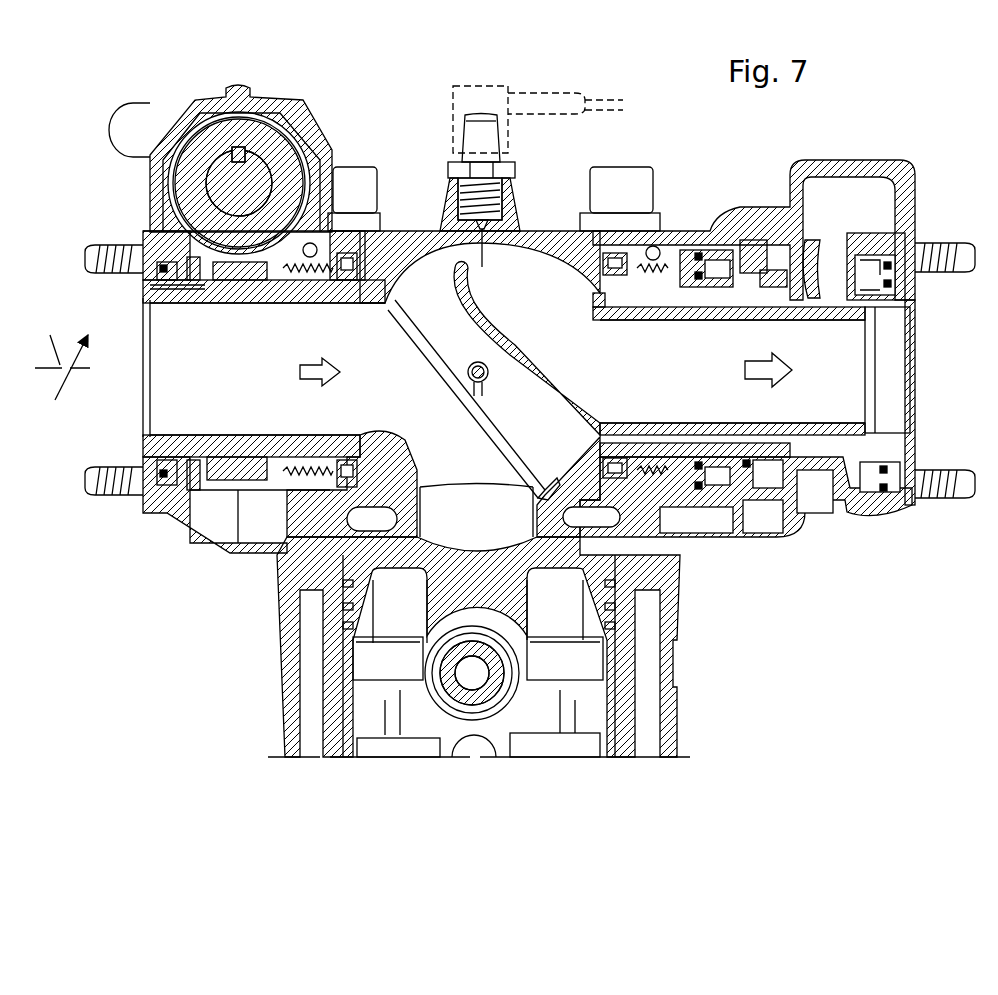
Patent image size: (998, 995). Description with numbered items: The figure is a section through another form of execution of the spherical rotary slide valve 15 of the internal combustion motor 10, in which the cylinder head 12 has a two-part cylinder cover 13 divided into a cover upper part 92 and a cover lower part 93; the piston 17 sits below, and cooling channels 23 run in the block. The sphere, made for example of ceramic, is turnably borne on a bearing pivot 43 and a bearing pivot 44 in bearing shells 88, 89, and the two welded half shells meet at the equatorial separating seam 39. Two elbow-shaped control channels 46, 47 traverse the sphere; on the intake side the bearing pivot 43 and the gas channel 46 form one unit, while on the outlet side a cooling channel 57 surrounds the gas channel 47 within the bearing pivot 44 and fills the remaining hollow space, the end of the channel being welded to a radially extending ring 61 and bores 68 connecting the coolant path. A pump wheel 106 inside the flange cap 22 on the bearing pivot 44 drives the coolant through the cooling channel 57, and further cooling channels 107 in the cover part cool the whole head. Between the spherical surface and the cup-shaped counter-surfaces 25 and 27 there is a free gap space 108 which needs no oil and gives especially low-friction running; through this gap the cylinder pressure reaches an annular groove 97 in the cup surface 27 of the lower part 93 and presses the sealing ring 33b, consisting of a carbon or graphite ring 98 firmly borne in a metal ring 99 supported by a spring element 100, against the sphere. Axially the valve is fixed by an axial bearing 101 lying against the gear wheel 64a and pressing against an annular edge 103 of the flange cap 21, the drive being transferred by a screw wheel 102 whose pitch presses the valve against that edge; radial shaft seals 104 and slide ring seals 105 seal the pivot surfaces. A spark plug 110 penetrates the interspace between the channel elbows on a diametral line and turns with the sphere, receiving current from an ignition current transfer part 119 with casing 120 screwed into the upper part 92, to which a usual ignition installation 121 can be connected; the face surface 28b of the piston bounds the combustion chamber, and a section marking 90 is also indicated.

The internal combustion motor 10 is at (272, 688).
The cylinder head 12 is at (676, 168).
The cylinder cover 13 is at (662, 246).
The spherical rotary slide valve 15 is at (410, 247).
The piston 17 is at (287, 622).
The flange cap 21 is at (203, 507).
The flange cap 22 is at (850, 520).
The cooling channels 23 is at (655, 716).
The counter-surface 25 is at (548, 240).
The counter-surface 27 is at (392, 478).
The face surface 28b is at (475, 550).
The sealing ring 33b is at (585, 412).
The separating seam 39 is at (462, 262).
The bearing pivot 43 is at (335, 268).
The bearing pivot 44 is at (678, 257).
The control channel 46 is at (236, 347).
The control channel 47 is at (834, 359).
The cooling channel 57 is at (690, 302).
The ring 61 is at (852, 290).
The gear wheel 64a is at (245, 265).
The bores 68 is at (805, 295).
The bearing shell 88 is at (315, 240).
The bearing shell 89 is at (667, 445).
The section line 90 is at (75, 390).
The cover upper part 92 is at (525, 230).
The cover lower part 93 is at (745, 545).
The annular groove 97 is at (680, 553).
The carbon or graphite ring 98 is at (590, 432).
The metal ring 99 is at (572, 470).
The spring element 100 is at (278, 575).
The axial bearing 101 is at (152, 287).
The screw wheel 102 is at (205, 150).
The annular edge 103 is at (148, 240).
The radial shaft seals 104 is at (628, 458).
The slide ring seals 105 is at (725, 452).
The pump wheel 106 is at (845, 275).
The cooling channels 107 is at (253, 523).
The gap space 108 is at (433, 228).
The spark plug 110 is at (468, 375).
The ignition current transfer part 119 is at (492, 188).
The casing 120 is at (488, 128).
The ignition installation 121 is at (458, 88).